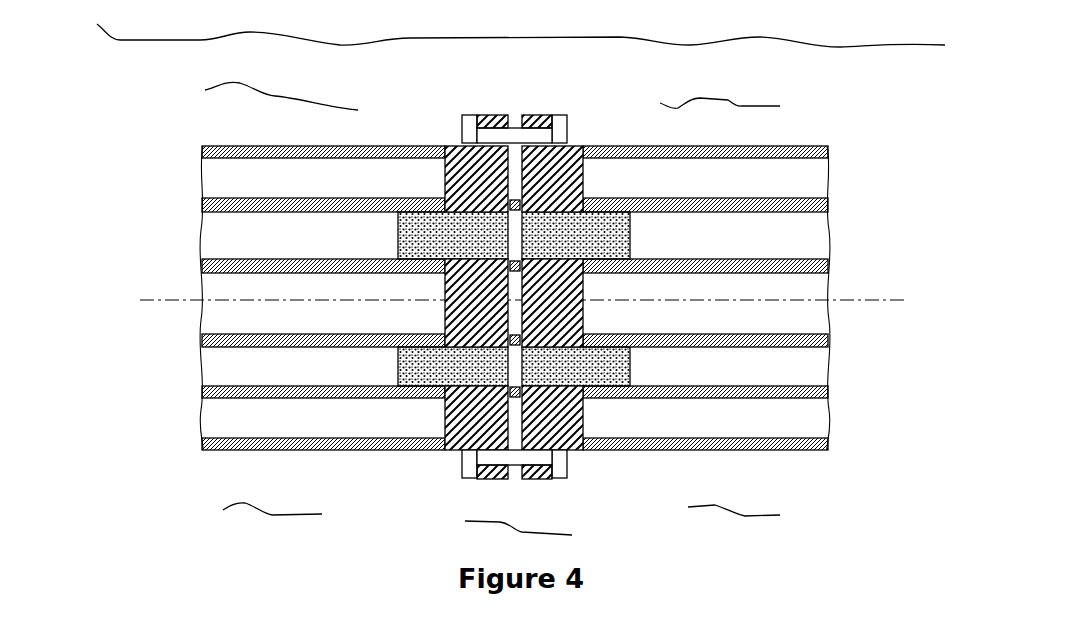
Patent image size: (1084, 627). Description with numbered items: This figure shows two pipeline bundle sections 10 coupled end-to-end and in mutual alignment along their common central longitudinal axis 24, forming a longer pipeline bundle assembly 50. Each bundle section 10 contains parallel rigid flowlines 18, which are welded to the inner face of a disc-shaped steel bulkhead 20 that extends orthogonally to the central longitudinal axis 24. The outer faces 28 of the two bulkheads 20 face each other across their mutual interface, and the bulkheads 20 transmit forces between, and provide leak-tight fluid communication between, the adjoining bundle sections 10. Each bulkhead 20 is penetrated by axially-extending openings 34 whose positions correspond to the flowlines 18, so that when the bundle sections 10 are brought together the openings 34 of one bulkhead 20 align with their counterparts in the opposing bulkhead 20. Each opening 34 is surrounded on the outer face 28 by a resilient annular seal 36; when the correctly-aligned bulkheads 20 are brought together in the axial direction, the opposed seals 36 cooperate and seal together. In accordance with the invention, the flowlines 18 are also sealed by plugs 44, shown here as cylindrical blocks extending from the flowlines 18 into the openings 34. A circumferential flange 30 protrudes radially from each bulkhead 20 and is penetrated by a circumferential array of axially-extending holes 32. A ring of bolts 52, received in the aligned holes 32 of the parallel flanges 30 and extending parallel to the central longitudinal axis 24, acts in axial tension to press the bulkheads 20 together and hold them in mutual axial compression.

The bundle section 10 is at (510, 311).
The flowlines 18 is at (282, 235).
The bulkhead 20 is at (522, 269).
The central longitudinal axis 24 is at (160, 305).
The outer face 28 is at (512, 150).
The circumferential flange 30 is at (535, 481).
The holes 32 is at (490, 118).
The openings 34 is at (447, 203).
The seal 36 is at (584, 302).
The plugs 44 is at (398, 238).
The pipeline bundle assembly 50 is at (437, 481).
The bolts 52 is at (555, 132).